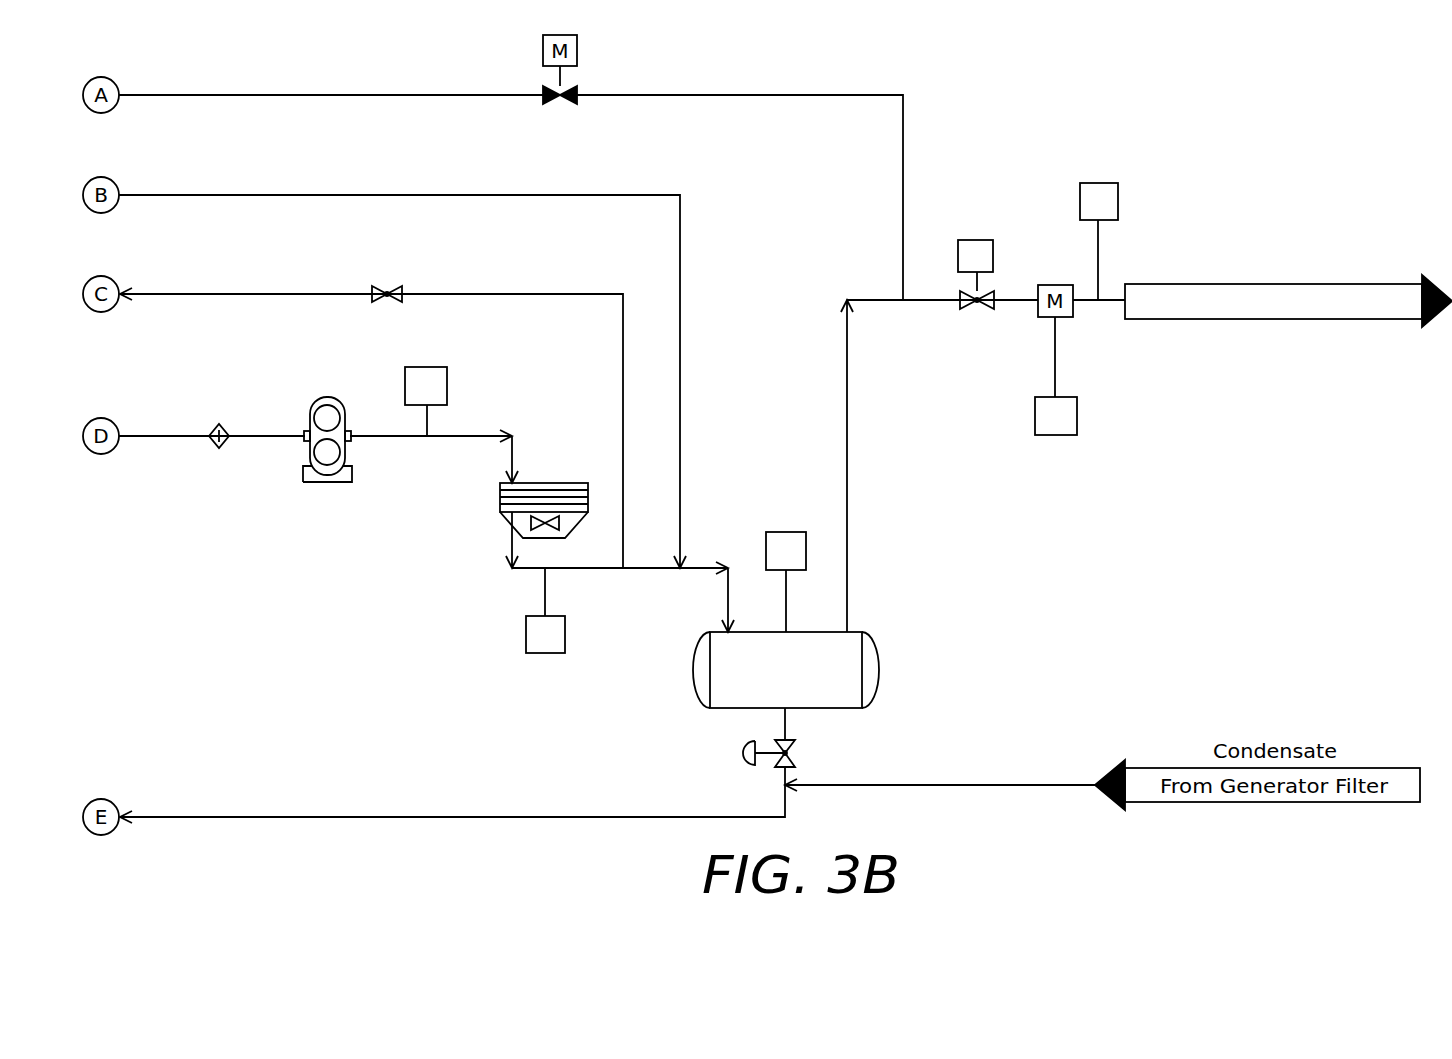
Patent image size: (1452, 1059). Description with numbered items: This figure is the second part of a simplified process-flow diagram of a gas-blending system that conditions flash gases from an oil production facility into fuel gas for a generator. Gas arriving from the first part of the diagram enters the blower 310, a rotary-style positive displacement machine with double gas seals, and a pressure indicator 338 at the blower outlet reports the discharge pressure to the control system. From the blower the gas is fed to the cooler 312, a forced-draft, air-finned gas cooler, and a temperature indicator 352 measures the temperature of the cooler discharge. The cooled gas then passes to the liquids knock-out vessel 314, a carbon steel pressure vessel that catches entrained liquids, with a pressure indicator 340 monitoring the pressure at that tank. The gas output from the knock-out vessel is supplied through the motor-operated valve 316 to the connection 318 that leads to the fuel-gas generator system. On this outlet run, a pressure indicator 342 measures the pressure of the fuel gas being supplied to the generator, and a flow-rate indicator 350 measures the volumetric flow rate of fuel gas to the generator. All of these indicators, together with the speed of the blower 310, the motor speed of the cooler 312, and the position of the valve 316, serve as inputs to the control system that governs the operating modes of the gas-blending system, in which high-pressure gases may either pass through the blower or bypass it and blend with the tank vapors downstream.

The blower 310 is at (330, 397).
The cooler 312 is at (500, 512).
The liquids knock-out vessel 314 is at (862, 632).
The motor-operated valve 316 is at (988, 308).
The connection 318 is at (1352, 283).
The pressure indicator 338 is at (428, 367).
The pressure indicator 340 is at (785, 532).
The pressure indicator 342 is at (1119, 205).
The flow-rate indicator 350 is at (1077, 418).
The temperature indicator 352 is at (567, 637).